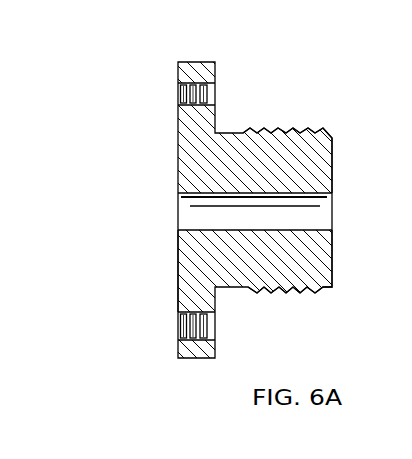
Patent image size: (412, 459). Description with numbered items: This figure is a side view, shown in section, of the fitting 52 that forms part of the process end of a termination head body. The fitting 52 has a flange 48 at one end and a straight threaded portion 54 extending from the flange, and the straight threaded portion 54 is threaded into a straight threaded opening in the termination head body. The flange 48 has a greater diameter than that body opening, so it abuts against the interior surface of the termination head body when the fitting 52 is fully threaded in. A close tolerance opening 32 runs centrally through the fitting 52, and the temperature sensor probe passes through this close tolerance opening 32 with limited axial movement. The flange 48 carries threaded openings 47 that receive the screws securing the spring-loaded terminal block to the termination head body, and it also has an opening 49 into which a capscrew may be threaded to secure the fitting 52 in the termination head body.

The fitting 52 is at (146, 172).
The opening in the flange 49 is at (178, 98).
The threaded openings 47 is at (178, 318).
The flange 48 is at (178, 275).
The close tolerance opening 32 is at (332, 155).
The straight threaded portion 54 is at (332, 285).